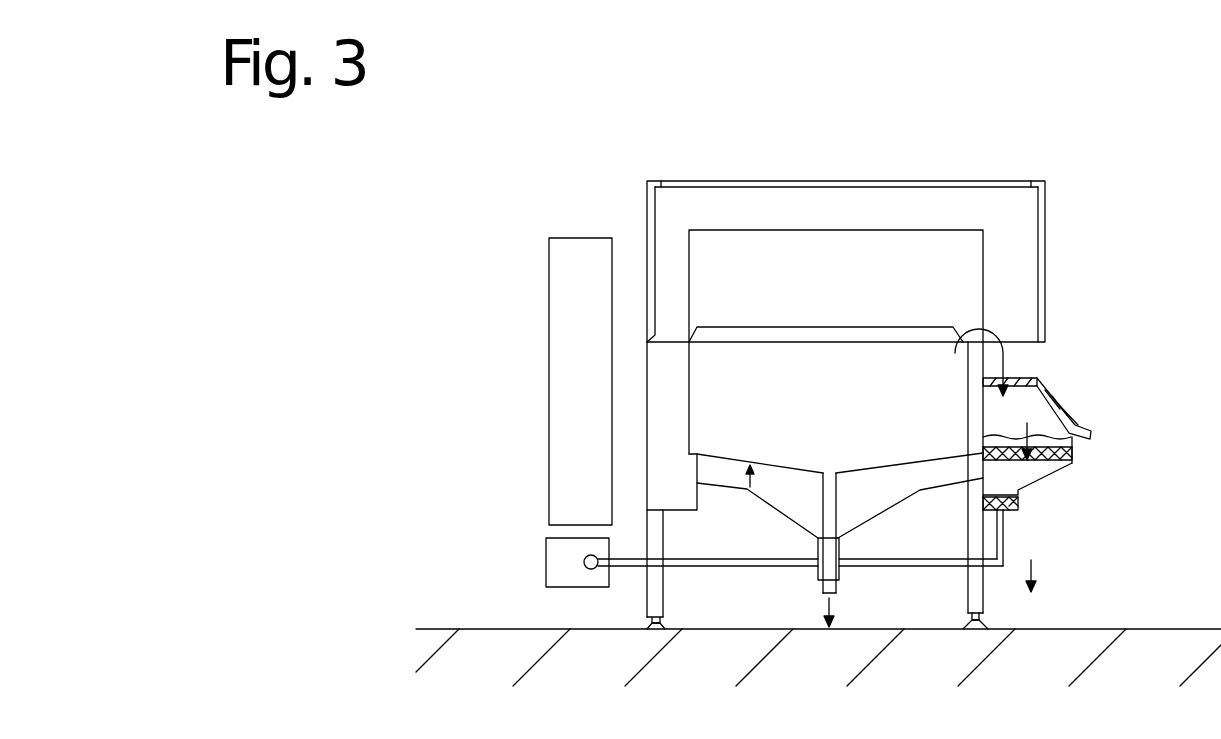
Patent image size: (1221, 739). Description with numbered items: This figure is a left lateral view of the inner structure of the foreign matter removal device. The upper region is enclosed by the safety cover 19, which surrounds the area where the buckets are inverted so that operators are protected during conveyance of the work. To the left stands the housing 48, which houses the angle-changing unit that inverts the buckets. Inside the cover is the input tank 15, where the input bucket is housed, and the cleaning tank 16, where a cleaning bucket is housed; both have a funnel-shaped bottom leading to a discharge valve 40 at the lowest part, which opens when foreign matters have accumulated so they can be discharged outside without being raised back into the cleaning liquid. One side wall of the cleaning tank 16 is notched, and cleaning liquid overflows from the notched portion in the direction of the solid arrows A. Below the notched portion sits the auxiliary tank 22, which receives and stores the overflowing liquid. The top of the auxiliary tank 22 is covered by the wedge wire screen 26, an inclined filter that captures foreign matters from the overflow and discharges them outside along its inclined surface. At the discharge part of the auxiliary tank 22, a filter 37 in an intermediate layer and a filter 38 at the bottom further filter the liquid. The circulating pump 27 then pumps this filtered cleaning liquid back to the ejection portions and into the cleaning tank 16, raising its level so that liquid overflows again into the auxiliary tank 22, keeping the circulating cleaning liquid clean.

The safety cover 19 is at (655, 333).
The housing 48 is at (549, 385).
The circulating pump 27 is at (546, 570).
The input tank 15 is at (805, 474).
The cleaning tank 16 is at (752, 493).
The discharge valve 40 is at (818, 572).
The overflow direction arrows A is at (1003, 364).
The wedge wire screen 26 is at (1061, 410).
The filter 37 is at (1072, 461).
The auxiliary tank 22 is at (1022, 475).
The filter 38 is at (1010, 512).